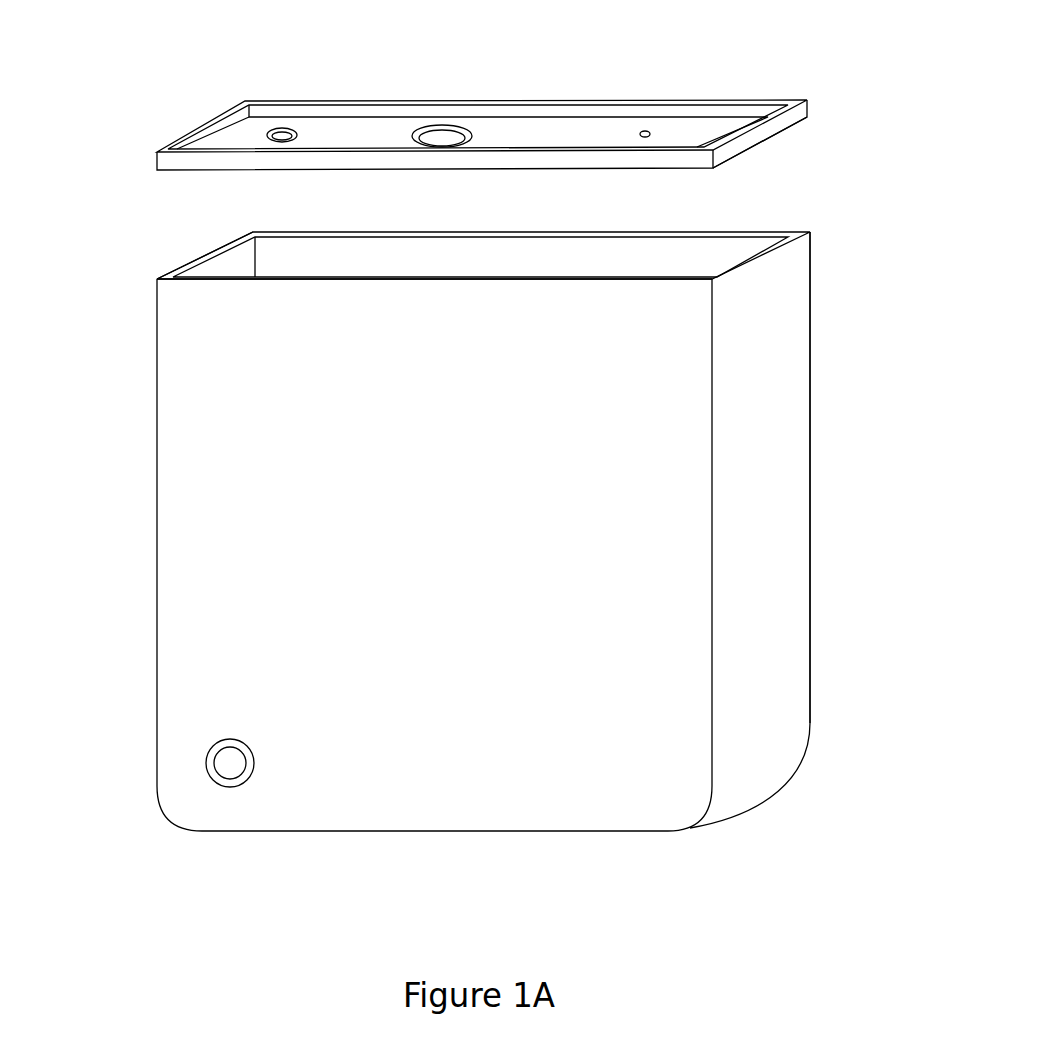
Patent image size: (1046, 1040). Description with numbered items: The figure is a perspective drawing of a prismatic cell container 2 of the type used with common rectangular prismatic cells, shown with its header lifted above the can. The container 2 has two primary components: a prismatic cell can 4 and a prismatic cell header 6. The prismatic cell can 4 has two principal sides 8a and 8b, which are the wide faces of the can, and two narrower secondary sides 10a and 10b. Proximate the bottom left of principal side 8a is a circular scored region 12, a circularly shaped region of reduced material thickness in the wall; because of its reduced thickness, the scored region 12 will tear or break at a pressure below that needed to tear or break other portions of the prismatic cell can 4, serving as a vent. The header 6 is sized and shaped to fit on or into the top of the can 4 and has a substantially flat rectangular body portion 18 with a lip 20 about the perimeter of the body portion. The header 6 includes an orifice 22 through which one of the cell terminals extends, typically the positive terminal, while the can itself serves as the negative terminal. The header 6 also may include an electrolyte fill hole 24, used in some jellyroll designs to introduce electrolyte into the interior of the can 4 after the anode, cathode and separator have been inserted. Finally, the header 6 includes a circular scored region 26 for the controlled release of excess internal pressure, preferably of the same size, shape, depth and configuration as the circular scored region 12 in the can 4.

The prismatic cell container 2 is at (835, 98).
The prismatic cell can 4 is at (496, 515).
The prismatic cell header 6 is at (468, 116).
The principal side 8a is at (446, 532).
The principal side 8b is at (703, 247).
The secondary side 10a is at (792, 418).
The secondary side 10b is at (228, 262).
The circular scored region 12 is at (200, 767).
The body portion 18 is at (555, 128).
The lip 20 is at (777, 123).
The orifice 22 is at (282, 135).
The electrolyte fill hole 24 is at (645, 132).
The circular scored region 26 is at (440, 137).